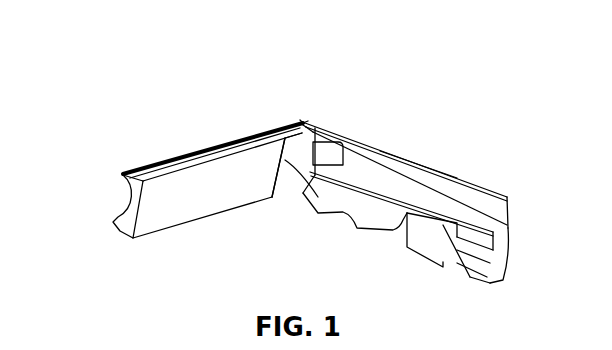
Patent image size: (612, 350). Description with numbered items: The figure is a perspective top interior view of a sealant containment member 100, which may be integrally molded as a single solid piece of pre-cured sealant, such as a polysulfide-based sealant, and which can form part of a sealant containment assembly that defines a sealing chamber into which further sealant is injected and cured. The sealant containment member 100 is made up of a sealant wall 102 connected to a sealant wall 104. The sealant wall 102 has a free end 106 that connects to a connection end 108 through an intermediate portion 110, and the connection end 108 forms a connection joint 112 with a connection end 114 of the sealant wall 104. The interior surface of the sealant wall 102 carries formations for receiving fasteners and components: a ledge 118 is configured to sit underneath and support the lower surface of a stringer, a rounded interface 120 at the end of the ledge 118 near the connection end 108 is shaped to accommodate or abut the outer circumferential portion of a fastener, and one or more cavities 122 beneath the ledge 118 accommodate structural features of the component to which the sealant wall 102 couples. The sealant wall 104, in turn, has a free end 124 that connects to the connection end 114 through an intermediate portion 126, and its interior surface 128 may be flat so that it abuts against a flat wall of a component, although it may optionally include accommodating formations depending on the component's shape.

The sealant containment member 100 is at (119, 140).
The sealant wall 102 is at (427, 163).
The sealant wall 104 is at (203, 163).
The free end 106 is at (360, 155).
The connection end 108 is at (310, 127).
The intermediate portion 110 is at (457, 178).
The connection joint 112 is at (300, 123).
The connection end 114 is at (300, 120).
The ledge 118 is at (360, 200).
The rounded interface 120 is at (310, 170).
The cavities 122 is at (303, 194).
The free end 124 is at (123, 225).
The intermediate portion 126 is at (182, 163).
The interior surface 128 is at (145, 210).